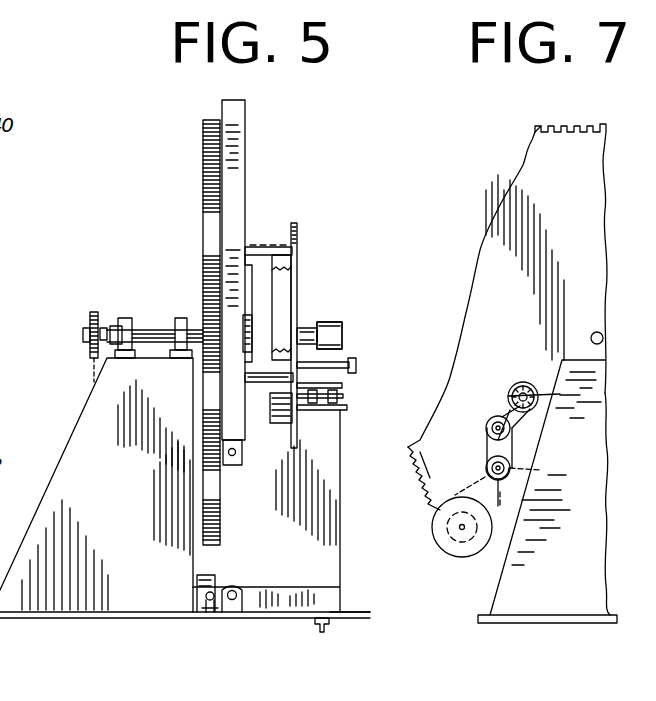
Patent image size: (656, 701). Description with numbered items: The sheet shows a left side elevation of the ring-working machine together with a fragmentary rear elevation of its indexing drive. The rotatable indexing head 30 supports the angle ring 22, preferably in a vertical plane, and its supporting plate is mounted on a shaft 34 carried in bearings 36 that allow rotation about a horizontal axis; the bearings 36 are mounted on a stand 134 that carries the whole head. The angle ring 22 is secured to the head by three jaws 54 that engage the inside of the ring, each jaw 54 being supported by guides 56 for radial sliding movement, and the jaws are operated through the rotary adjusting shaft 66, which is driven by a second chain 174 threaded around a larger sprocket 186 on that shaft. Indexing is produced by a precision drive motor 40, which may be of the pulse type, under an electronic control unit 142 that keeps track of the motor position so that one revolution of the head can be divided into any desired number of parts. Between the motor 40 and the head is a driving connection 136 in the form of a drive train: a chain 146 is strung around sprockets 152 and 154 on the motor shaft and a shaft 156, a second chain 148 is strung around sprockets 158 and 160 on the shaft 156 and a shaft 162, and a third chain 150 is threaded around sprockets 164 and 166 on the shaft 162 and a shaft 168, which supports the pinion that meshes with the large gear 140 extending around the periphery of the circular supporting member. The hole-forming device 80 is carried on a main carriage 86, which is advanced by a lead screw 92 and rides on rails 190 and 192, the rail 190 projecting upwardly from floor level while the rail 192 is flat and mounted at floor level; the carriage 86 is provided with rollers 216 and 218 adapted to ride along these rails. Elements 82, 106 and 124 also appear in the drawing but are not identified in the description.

In FIG. 5, the angle ring 22 is at (299, 225).
In FIG. 5, the indexing head 30 is at (204, 120).
In FIG. 7, the indexing head 30 is at (604, 122).
In FIG. 7, the shaft 34 is at (597, 332).
In FIG. 5, the bearings 36 is at (180, 318).
In FIG. 7, the precision drive motor 40 is at (510, 392).
In FIG. 5, the jaws 54 is at (291, 254).
In FIG. 5, the guides 56 is at (246, 128).
In FIG. 5, the rotary adjusting shaft 66 is at (96, 312).
In FIG. 5, the hole-forming device 80 is at (308, 320).
In FIG. 5, the motor housing 82 is at (332, 322).
In FIG. 5, the main carriage 86 is at (342, 530).
In FIG. 5, the lead screw 92 is at (234, 590).
In FIG. 5, the bar 106 is at (340, 396).
In FIG. 5, the bracket plate 124 is at (357, 366).
In FIG. 5, the stand 134 is at (60, 450).
In FIG. 7, the stand 134 is at (570, 585).
In FIG. 7, the driving connection 136 is at (472, 446).
In FIG. 7, the large gear 140 is at (560, 122).
In FIG. 7, the electronic control unit 142 is at (540, 396).
In FIG. 7, the chain 146 is at (528, 410).
In FIG. 7, the second chain 148 is at (513, 446).
In FIG. 7, the third chain 150 is at (500, 506).
In FIG. 7, the sprocket 152 is at (522, 382).
In FIG. 7, the sprocket 154 is at (500, 420).
In FIG. 7, the shaft 156 is at (490, 425).
In FIG. 7, the sprocket 158 is at (494, 428).
In FIG. 7, the sprocket 160 is at (510, 474).
In FIG. 7, the shaft 162 is at (486, 466).
In FIG. 7, the sprocket 164 is at (542, 470).
In FIG. 7, the sprocket 166 is at (455, 557).
In FIG. 7, the shaft 168 is at (462, 527).
In FIG. 5, the second chain 174 is at (92, 372).
In FIG. 5, the sprocket 186 is at (87, 325).
In FIG. 5, the rail 190 is at (205, 590).
In FIG. 5, the rail 192 is at (340, 613).
In FIG. 5, the roller 216 is at (205, 596).
In FIG. 5, the roller 218 is at (318, 620).